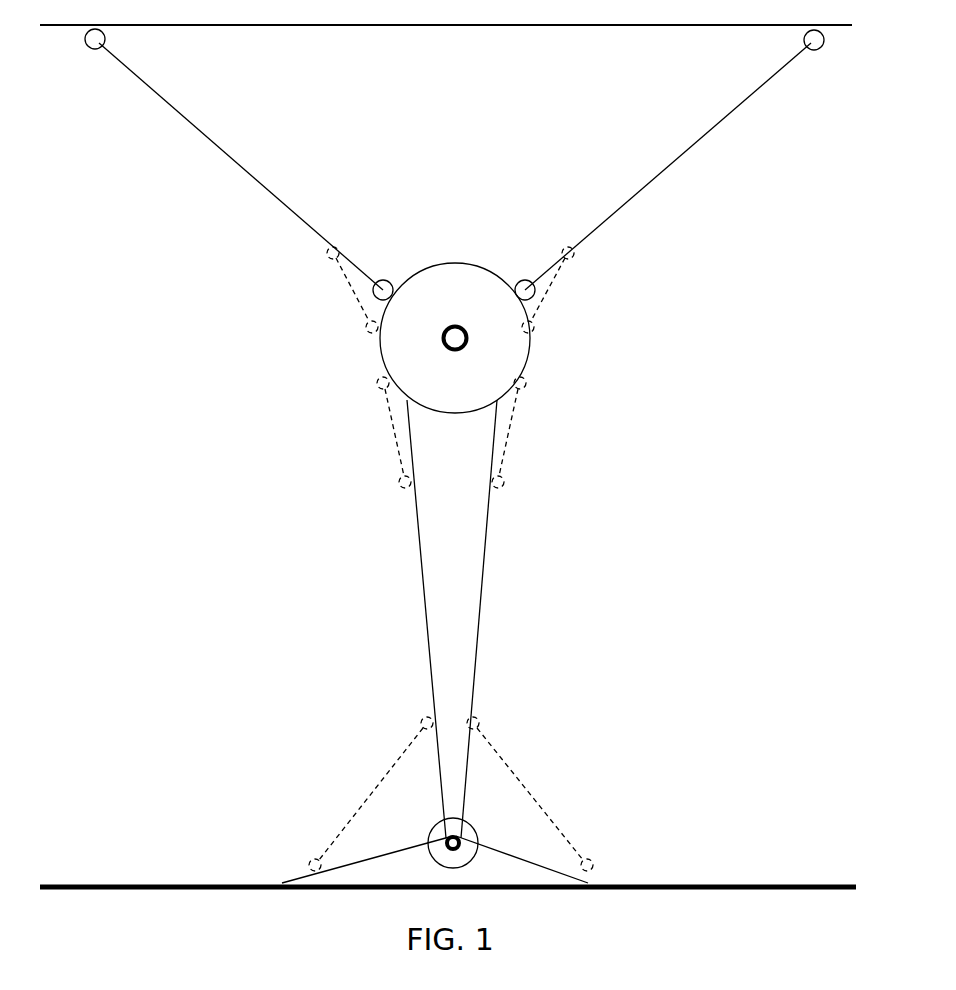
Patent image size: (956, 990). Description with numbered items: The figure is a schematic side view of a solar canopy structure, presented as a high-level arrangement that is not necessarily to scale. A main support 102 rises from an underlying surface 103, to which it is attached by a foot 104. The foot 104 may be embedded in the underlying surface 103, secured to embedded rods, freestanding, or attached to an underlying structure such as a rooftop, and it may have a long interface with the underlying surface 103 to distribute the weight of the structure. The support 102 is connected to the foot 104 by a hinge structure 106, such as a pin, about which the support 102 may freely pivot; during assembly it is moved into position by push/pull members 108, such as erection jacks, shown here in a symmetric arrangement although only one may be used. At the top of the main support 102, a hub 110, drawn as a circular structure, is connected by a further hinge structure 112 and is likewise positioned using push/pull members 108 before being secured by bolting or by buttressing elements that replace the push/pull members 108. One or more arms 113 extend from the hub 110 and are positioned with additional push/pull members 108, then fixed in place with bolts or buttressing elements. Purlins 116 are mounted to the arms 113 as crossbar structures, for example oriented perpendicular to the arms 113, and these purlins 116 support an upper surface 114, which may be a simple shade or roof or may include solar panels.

The main support 102 is at (418, 553).
The underlying surface 103 is at (145, 884).
The foot 104 is at (533, 862).
The hinge structure 106 is at (462, 837).
The push/pull members 108 is at (382, 780).
The hub 110 is at (380, 360).
The hinge structure 112 is at (455, 326).
The arms 113 is at (280, 199).
The upper surface 114 is at (451, 28).
The purlins 116 is at (813, 50).